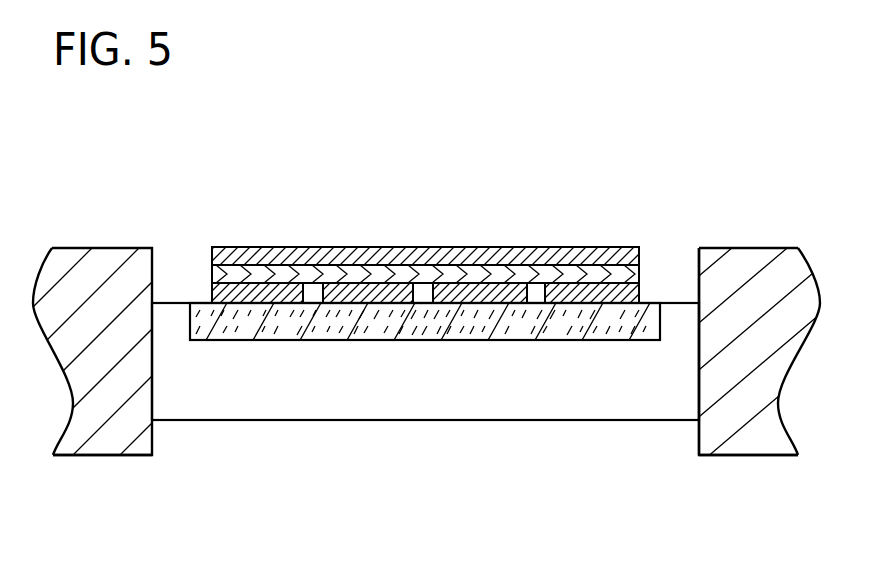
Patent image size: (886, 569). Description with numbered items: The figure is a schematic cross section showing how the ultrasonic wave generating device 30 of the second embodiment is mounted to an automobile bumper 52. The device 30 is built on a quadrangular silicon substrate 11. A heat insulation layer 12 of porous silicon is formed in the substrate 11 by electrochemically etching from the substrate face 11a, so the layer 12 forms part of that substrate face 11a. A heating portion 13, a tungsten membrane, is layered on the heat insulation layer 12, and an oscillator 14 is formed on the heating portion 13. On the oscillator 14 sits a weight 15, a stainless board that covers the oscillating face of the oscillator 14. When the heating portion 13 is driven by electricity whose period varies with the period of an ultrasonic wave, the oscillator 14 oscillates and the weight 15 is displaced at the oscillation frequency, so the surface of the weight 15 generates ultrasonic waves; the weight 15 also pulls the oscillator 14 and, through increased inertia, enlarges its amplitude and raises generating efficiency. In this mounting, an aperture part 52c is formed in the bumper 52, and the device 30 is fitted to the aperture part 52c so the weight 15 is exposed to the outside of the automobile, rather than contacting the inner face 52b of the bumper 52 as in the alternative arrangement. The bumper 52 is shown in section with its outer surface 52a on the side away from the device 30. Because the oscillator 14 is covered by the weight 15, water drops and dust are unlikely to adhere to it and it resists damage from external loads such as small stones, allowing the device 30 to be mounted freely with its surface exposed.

The substrate 11 is at (425, 332).
The substrate face 11a is at (182, 300).
The heat insulation layer 12 is at (540, 320).
The heating portion 13 is at (353, 290).
The oscillator 14 is at (250, 272).
The weight 15 is at (440, 262).
The ultrasonic wave generating device 30 is at (420, 236).
The bumper 52 is at (415, 337).
The curved outer surface of holding member 52a is at (108, 247).
The inner face 52b is at (103, 456).
The aperture part 52c is at (698, 266).